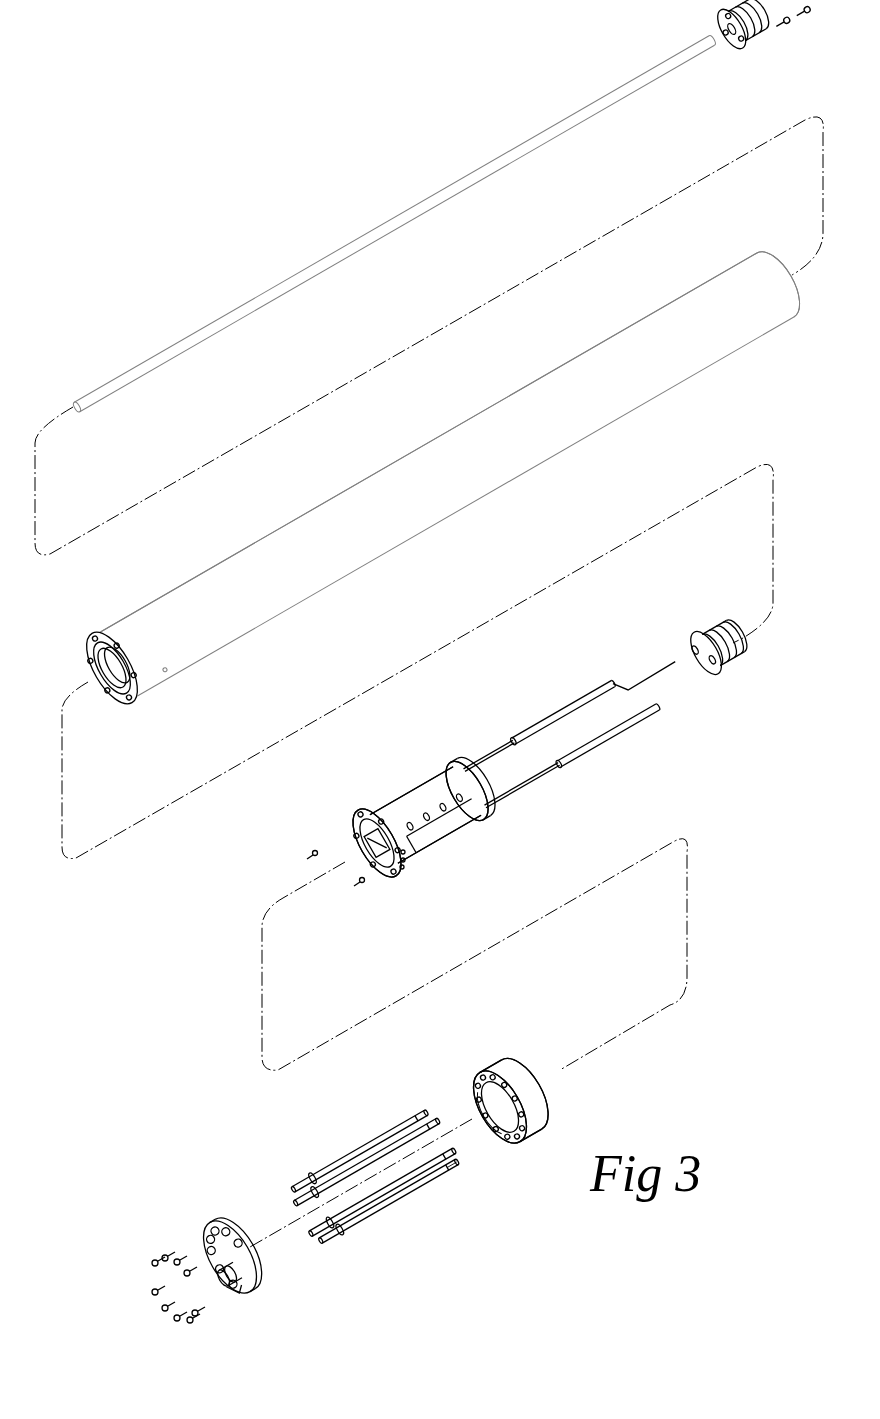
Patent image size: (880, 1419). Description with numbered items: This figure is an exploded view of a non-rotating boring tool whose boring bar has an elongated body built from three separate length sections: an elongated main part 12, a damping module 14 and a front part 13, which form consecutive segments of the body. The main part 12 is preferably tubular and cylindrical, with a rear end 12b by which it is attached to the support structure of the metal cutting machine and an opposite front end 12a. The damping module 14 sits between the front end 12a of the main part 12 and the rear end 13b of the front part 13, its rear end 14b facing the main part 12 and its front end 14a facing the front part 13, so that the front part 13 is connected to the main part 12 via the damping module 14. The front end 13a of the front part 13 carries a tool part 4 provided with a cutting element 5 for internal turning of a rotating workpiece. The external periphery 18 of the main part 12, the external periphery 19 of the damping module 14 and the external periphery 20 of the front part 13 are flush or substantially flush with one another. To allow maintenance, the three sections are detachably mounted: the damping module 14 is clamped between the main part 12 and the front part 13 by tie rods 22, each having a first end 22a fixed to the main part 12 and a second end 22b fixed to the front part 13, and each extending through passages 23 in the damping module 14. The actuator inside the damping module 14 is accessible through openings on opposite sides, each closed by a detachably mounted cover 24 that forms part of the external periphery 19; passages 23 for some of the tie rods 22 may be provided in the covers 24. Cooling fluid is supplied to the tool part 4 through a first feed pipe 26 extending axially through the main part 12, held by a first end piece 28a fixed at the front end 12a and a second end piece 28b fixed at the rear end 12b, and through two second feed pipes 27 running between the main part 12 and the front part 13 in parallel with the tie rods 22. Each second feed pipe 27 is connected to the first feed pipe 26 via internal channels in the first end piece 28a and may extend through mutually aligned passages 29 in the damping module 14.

The tool part 4 is at (262, 1273).
The cutting element 5 is at (237, 1290).
The main part 12 is at (468, 433).
The front end of the main part 12a is at (93, 637).
The rear end of the main part 12b is at (773, 255).
The front part 13 is at (538, 1118).
The front end of the front part 13a is at (480, 1077).
The rear end of the front part 13b is at (533, 1065).
The damping module 14 is at (480, 825).
The front end of the damping module 14a is at (367, 815).
The rear end of the damping module 14b is at (463, 763).
The external periphery of the main part 18 is at (262, 535).
The external periphery of the damping module 19 is at (478, 807).
The external periphery of the front part 20 is at (502, 1065).
The tie rods 22 is at (337, 1163).
The first end of the tie rod 22a is at (458, 1170).
The second end of the tie rod 22b is at (348, 1235).
The passages 23 is at (403, 852).
The cover 24 is at (420, 787).
The first feed pipe 26 is at (358, 245).
The second feed pipe 27 is at (572, 703).
The first end piece 28a is at (718, 632).
The second end piece 28b is at (752, 38).
The passages 29 is at (403, 860).